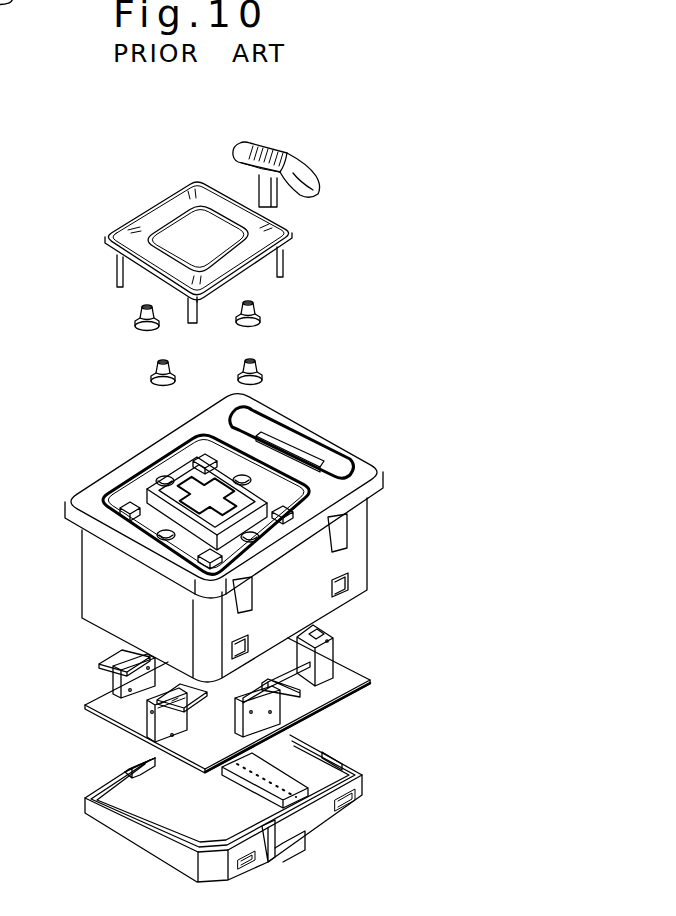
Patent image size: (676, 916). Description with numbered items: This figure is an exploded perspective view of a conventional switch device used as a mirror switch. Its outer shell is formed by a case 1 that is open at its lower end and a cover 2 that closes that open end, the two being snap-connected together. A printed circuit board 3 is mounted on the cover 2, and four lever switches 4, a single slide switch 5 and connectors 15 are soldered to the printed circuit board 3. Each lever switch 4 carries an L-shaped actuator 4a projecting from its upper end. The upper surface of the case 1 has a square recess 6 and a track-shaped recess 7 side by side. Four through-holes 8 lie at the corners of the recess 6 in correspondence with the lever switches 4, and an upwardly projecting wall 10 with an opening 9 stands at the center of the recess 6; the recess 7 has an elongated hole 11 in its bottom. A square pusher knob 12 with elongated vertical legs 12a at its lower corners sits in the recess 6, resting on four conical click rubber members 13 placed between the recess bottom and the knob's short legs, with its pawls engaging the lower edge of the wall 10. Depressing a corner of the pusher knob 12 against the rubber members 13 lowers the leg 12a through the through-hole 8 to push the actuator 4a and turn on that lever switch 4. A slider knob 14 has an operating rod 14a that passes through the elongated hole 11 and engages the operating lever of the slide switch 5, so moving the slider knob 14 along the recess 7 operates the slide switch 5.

The case 1 is at (68, 492).
The cover 2 is at (132, 837).
The printed circuit board 3 is at (350, 672).
The lever switch 4 is at (113, 683).
The actuator 4a is at (106, 658).
The slide switch 5 is at (328, 655).
The recess 6 is at (137, 472).
The recess 7 is at (346, 456).
The through-hole 8 is at (121, 505).
The opening 9 is at (207, 467).
The upwardly projecting wall 10 is at (185, 470).
The elongated hole 11 is at (280, 442).
The pusher knob 12 is at (143, 203).
The elongated vertical leg 12a is at (116, 274).
The click rubber member 13 is at (134, 317).
The slider knob 14 is at (293, 147).
The operating rod 14a is at (283, 208).
The connector 15 is at (298, 684).